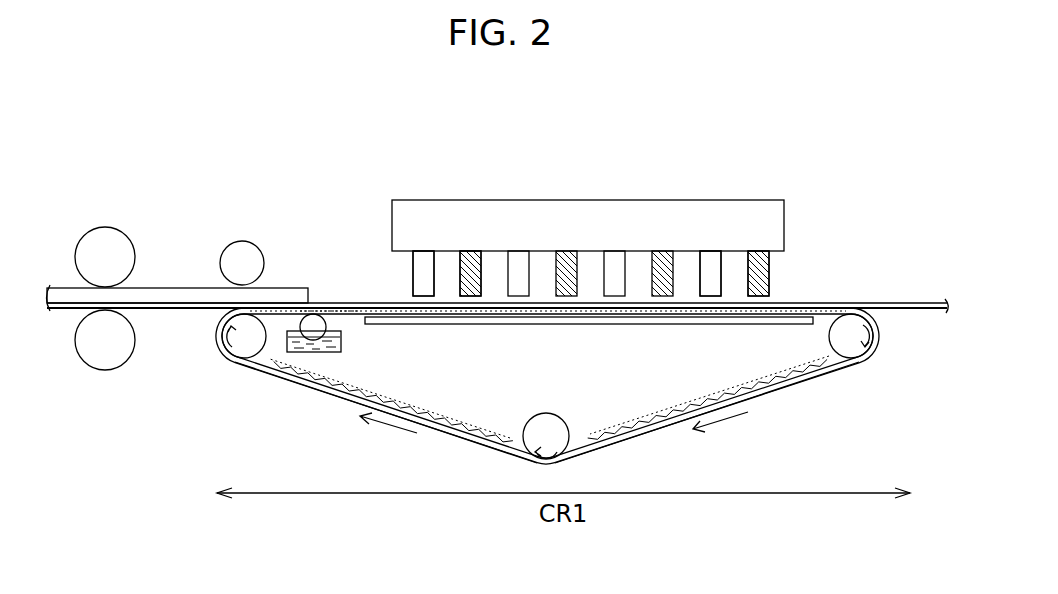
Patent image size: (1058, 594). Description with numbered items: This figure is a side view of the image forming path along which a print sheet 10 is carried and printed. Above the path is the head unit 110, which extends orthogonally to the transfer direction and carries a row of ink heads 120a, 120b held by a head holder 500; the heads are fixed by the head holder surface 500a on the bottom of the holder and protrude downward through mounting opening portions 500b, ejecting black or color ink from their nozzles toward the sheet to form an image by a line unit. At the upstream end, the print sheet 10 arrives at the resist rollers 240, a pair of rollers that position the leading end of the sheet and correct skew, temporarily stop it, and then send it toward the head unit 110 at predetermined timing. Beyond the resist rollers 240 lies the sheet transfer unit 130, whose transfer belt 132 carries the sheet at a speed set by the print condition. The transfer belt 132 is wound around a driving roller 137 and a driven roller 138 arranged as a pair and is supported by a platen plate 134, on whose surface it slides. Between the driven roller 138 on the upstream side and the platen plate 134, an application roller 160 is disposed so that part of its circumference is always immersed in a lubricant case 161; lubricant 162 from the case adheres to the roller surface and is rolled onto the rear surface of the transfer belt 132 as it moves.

The print sheet 10 is at (175, 287).
The resist rollers 240 is at (105, 227).
The head unit 110 is at (523, 200).
The head holder 500 is at (397, 225).
The head holder surface 500a is at (403, 252).
The mounting opening portion 500b is at (464, 251).
The ink head 120a is at (708, 262).
The ink head 120b is at (757, 273).
The sheet transfer unit 130 is at (283, 406).
The transfer belt 132 is at (783, 395).
The platen plate 134 is at (692, 325).
The driving roller 137 is at (880, 343).
The driven roller 138 is at (216, 343).
The application roller 160 is at (312, 314).
The lubricant case 161 is at (327, 353).
The lubricant 162 is at (353, 315).